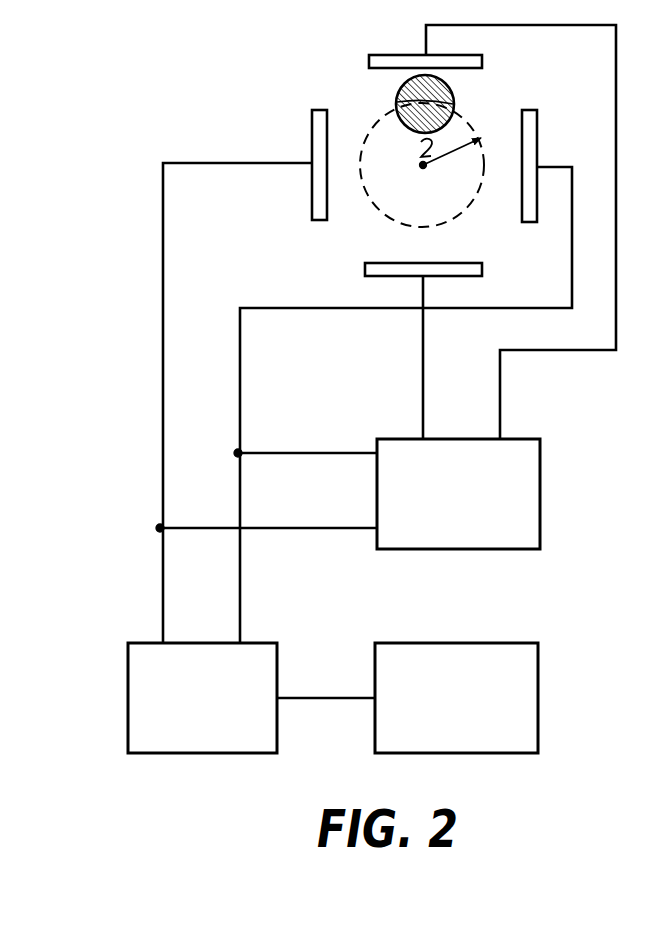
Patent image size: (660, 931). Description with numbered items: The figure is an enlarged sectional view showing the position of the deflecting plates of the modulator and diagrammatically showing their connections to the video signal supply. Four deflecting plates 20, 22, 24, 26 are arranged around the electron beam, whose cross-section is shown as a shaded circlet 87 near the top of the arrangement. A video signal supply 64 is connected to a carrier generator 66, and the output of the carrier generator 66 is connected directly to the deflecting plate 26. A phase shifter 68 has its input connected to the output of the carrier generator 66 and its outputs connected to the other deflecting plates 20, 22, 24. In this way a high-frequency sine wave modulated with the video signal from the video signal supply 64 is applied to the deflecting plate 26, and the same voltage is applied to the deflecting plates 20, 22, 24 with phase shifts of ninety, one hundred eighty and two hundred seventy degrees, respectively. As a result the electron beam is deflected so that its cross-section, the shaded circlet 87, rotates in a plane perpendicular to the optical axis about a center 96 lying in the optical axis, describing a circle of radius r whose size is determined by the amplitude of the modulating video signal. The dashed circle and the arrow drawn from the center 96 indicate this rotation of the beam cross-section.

The deflecting plate 20 is at (382, 54).
The deflecting plate 22 is at (537, 118).
The deflecting plate 24 is at (365, 270).
The deflecting plate 26 is at (311, 118).
The shaded circlet 87 is at (454, 95).
The center 96 is at (423, 168).
The phase shifter 68 is at (534, 440).
The carrier generator 66 is at (268, 643).
The video signal supply 64 is at (523, 643).